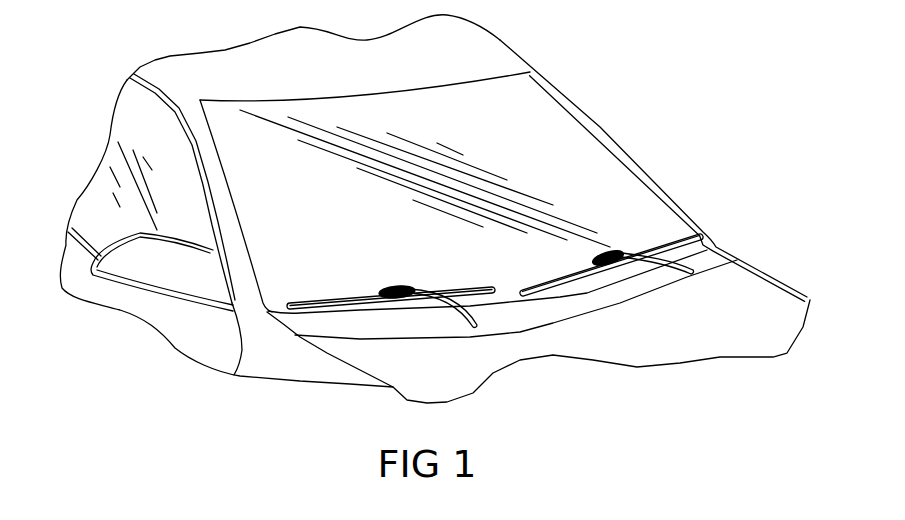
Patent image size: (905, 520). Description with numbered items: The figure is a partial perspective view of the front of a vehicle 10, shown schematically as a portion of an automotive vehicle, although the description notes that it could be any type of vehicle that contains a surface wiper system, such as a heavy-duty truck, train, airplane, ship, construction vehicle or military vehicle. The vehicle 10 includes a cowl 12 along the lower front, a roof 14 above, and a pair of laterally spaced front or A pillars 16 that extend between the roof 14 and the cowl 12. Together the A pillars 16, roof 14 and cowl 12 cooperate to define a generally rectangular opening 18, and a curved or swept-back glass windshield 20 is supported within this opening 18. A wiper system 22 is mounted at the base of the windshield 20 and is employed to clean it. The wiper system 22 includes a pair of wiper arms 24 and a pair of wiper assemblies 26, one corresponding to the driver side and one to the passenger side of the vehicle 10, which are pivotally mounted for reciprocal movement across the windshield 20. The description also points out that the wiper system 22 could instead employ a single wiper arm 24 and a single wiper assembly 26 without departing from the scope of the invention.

The vehicle 10 is at (97, 76).
The cowl 12 is at (717, 258).
The roof 14 is at (503, 52).
The A pillars 16 is at (650, 170).
The opening 18 is at (592, 135).
The windshield 20 is at (490, 131).
The wiper system 22 is at (580, 342).
The wiper arms 24 is at (666, 276).
The wiper assemblies 26 is at (351, 287).